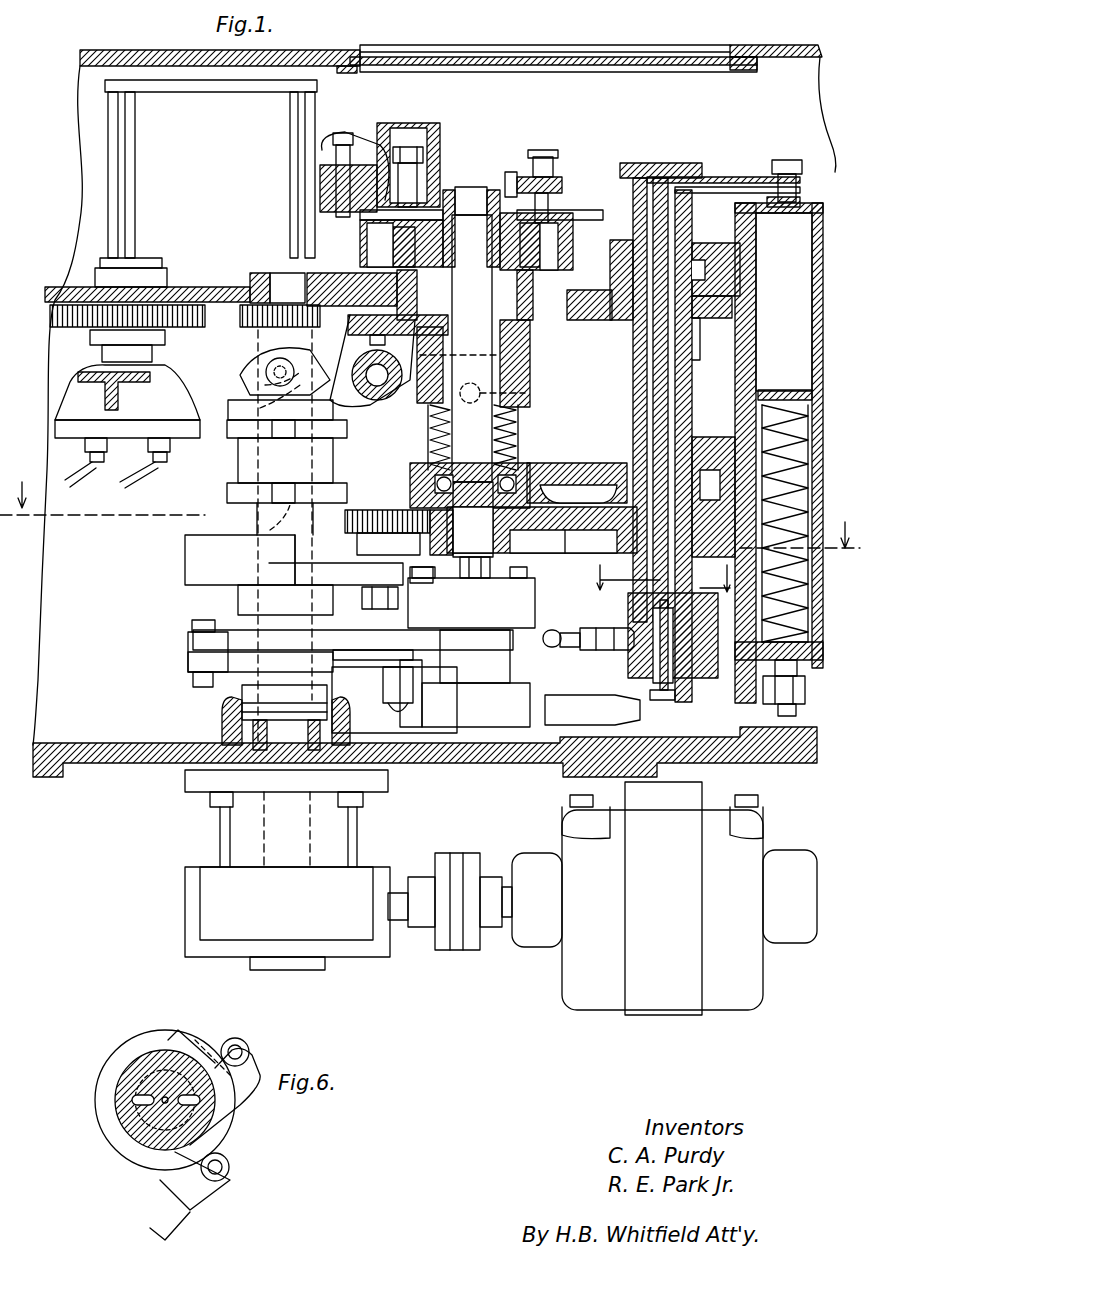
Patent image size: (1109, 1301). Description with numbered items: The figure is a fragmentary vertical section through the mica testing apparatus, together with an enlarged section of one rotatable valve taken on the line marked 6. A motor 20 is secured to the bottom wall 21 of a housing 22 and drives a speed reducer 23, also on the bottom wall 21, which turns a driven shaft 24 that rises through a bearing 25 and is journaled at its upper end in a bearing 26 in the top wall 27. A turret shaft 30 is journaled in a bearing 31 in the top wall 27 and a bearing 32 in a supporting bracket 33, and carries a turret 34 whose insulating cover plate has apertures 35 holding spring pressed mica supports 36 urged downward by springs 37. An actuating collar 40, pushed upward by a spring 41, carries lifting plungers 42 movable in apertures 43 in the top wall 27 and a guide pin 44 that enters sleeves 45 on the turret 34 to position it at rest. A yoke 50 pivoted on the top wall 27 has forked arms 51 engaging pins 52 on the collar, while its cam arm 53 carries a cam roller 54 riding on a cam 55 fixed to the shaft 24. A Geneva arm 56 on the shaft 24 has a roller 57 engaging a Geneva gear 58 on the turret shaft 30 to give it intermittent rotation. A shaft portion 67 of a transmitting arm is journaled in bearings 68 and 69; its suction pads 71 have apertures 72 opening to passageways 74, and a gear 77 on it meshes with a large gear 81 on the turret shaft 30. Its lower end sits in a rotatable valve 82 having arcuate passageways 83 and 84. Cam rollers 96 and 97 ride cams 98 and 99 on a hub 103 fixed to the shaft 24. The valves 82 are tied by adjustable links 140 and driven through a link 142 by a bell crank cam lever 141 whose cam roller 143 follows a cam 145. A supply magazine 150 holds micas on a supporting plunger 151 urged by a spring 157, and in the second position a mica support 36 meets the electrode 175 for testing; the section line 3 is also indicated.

In FIG. 1, the motor 20 is at (575, 982).
In FIG. 1, the bottom wall 21 is at (500, 770).
In FIG. 1, the housing 22 is at (60, 768).
In FIG. 1, the speed reducer 23 is at (210, 895).
In FIG. 1, the driven shaft 24 is at (285, 765).
In FIG. 1, the bearing 25 is at (250, 727).
In FIG. 1, the bearing 26 is at (290, 282).
In FIG. 1, the top wall 27 is at (60, 292).
In FIG. 1, the turret shaft 30 is at (490, 428).
In FIG. 1, the bearing 31 is at (458, 400).
In FIG. 1, the bearing 32 is at (505, 465).
In FIG. 1, the supporting bracket 33 is at (570, 470).
In FIG. 1, the turret 34 is at (495, 200).
In FIG. 1, the apertures 35 is at (380, 195).
In FIG. 1, the mica supports 36 is at (405, 175).
In FIG. 1, the springs 37 is at (558, 185).
In FIG. 1, the actuating collar 40 is at (512, 375).
In FIG. 1, the spring 41 is at (425, 440).
In FIG. 1, the lifting plungers 42 is at (420, 300).
In FIG. 1, the apertures 43 is at (440, 268).
In FIG. 1, the guide pin 44 is at (345, 360).
In FIG. 1, the sleeves 45 is at (400, 235).
In FIG. 1, the yoke 50 is at (370, 400).
In FIG. 1, the forked arms 51 is at (515, 355).
In FIG. 1, the pins 52 is at (545, 390).
In FIG. 1, the cam arm 53 is at (305, 350).
In FIG. 1, the cam roller 54 is at (262, 386).
In FIG. 1, the cam 55 is at (258, 408).
In FIG. 1, the Geneva arm 56 is at (200, 585).
In FIG. 1, the roller 57 is at (372, 515).
In FIG. 1, the Geneva gear 58 is at (540, 550).
In FIG. 1, the shaft portion 67 is at (690, 375).
In FIG. 1, the bearings 68 is at (705, 275).
In FIG. 1, the bearings 69 is at (700, 437).
In FIG. 1, the suction pads 71 is at (512, 175).
In FIG. 1, the apertures 72 is at (570, 158).
In FIG. 1, the passageways 74 is at (645, 180).
In FIG. 6, the passageways 74 is at (145, 1112).
In FIG. 1, the gear 77 is at (612, 522).
In FIG. 1, the gear 81 is at (392, 512).
In FIG. 1, the rotatable valves 82 is at (510, 618).
In FIG. 6, the rotatable valves 82 is at (138, 1050).
In FIG. 1, the passageway 83 is at (650, 680).
In FIG. 6, the passageway 83 is at (135, 1165).
In FIG. 6, the passageway 84 is at (125, 1070).
In FIG. 1, the cam roller 96 is at (283, 438).
In FIG. 1, the cam roller 97 is at (268, 528).
In FIG. 1, the cam 98 is at (290, 481).
In FIG. 1, the cam 99 is at (235, 492).
In FIG. 1, the hub 103 is at (240, 463).
In FIG. 1, the adjustable links 140 is at (595, 652).
In FIG. 6, the adjustable links 140 is at (185, 1000).
In FIG. 1, the bell crank cam lever 141 is at (215, 686).
In FIG. 1, the link 142 is at (390, 630).
In FIG. 1, the cam roller 143 is at (195, 652).
In FIG. 1, the cam 145 is at (195, 625).
In FIG. 1, the supply magazine 150 is at (825, 625).
In FIG. 1, the supporting plunger 151 is at (805, 390).
In FIG. 1, the spring 157 is at (782, 400).
In FIG. 1, the electrode 175 is at (448, 190).
In FIG. 1, the section line 3 is at (430, 503).
In FIG. 1, the section line 6 is at (663, 576).